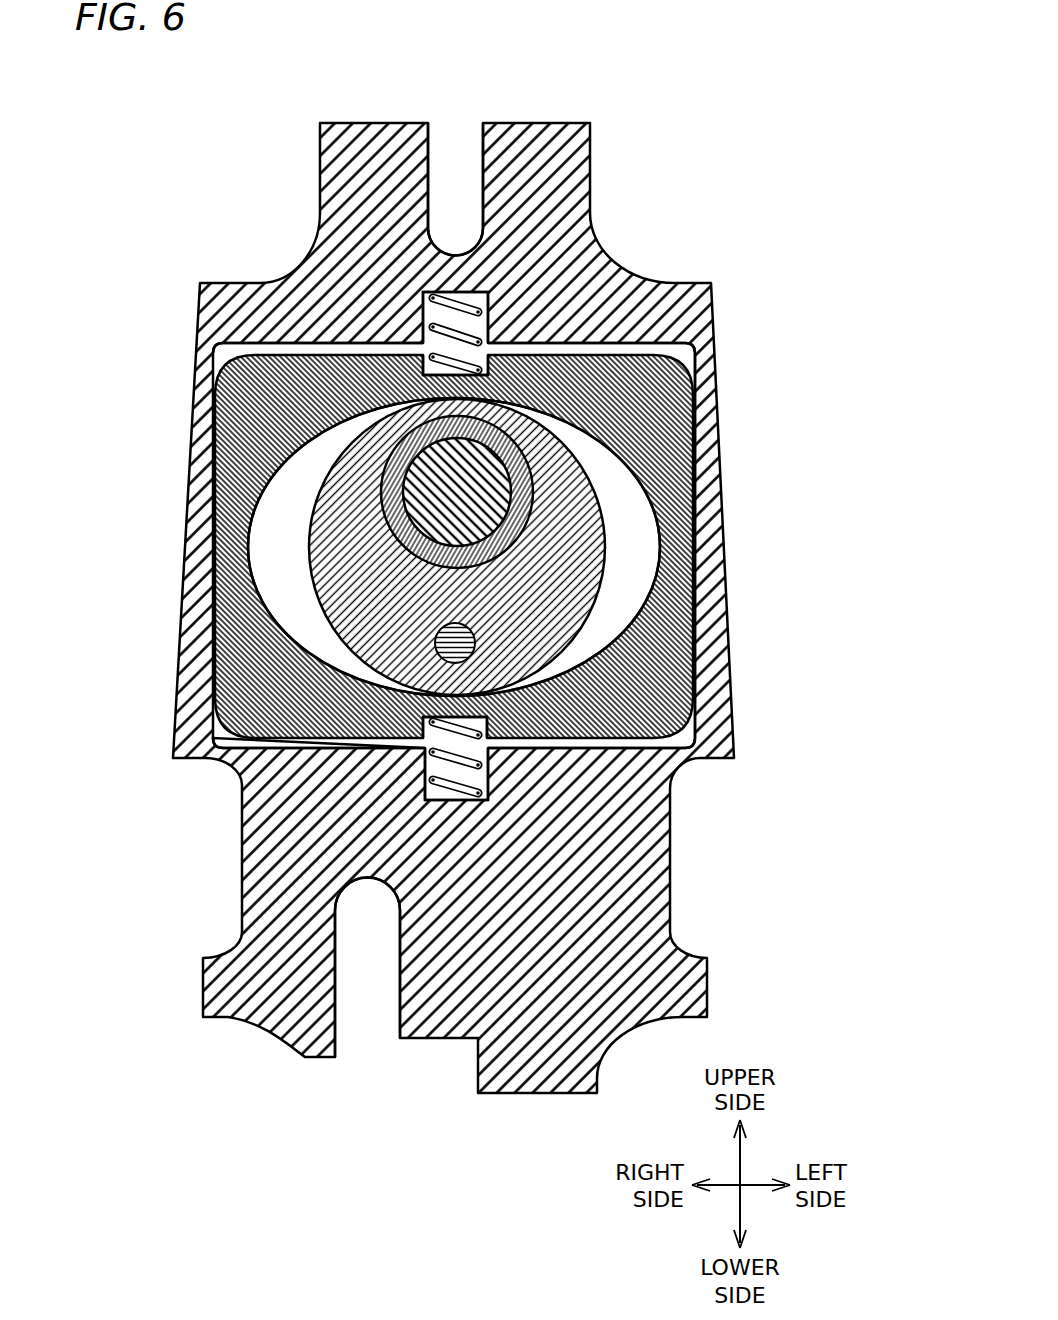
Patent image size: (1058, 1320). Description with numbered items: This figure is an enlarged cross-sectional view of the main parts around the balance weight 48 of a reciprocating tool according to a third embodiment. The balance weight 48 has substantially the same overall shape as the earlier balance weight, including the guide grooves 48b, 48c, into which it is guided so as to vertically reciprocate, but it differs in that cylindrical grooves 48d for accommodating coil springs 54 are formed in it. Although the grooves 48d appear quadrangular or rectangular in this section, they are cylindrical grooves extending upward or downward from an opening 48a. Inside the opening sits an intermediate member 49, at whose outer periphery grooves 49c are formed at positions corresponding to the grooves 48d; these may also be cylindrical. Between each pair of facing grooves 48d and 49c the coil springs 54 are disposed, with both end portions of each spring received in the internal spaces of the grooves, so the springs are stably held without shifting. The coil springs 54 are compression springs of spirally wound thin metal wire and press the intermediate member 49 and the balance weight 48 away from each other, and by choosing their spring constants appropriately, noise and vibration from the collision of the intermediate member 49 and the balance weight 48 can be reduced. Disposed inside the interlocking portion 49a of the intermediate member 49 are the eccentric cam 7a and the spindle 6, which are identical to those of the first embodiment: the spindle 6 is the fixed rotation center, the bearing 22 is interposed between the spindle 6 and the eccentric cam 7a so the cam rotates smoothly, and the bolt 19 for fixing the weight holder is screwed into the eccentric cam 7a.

The balance weight 48 is at (683, 281).
The opening 48a is at (692, 339).
The guide groove 48b is at (457, 185).
The guide groove 48c is at (367, 998).
The cylindrical groove 48d is at (425, 297).
The intermediate member 49 is at (656, 421).
The interlocking portion 49a is at (660, 531).
The groove 49c is at (425, 353).
The coil spring 54 is at (480, 340).
The eccentric cam 7a is at (357, 588).
The bearing 22 is at (388, 495).
The spindle 6 is at (427, 468).
The bolt 19 is at (433, 645).